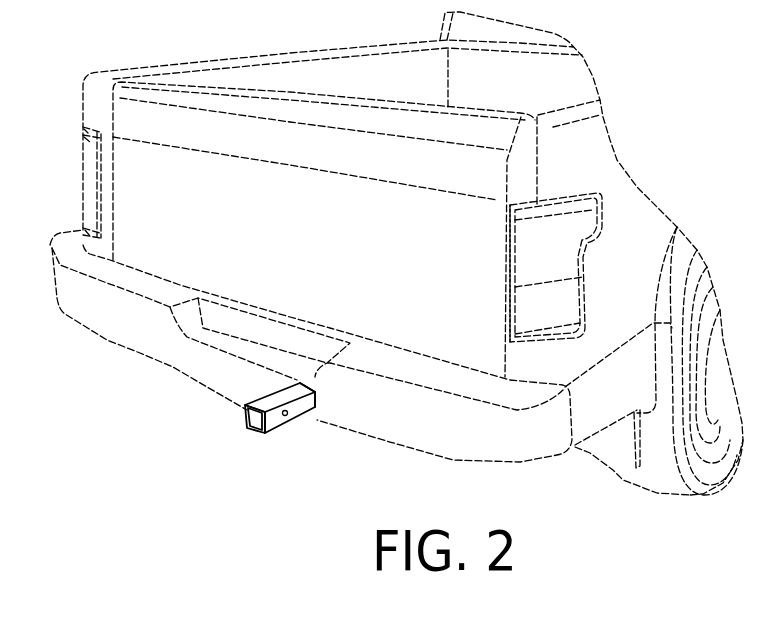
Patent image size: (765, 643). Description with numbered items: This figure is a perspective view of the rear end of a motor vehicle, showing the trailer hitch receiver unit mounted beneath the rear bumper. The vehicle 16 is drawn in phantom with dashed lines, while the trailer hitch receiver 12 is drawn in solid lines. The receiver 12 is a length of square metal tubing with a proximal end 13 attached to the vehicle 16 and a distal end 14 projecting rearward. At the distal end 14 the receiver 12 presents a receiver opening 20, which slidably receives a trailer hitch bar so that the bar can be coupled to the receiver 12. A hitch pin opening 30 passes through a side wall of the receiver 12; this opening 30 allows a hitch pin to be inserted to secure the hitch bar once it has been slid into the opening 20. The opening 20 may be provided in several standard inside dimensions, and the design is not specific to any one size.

The trailer hitch receiver 12 is at (269, 443).
The proximal end 13 is at (315, 402).
The distal end 14 is at (255, 433).
The vehicle 16 is at (443, 298).
The receiver opening 20 is at (245, 410).
The hitch pin opening 30 is at (287, 417).